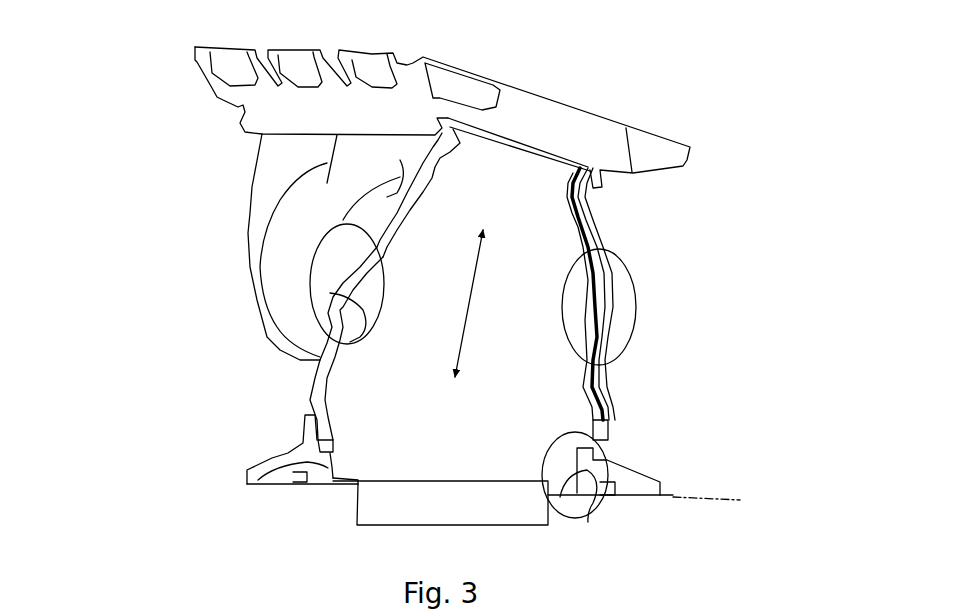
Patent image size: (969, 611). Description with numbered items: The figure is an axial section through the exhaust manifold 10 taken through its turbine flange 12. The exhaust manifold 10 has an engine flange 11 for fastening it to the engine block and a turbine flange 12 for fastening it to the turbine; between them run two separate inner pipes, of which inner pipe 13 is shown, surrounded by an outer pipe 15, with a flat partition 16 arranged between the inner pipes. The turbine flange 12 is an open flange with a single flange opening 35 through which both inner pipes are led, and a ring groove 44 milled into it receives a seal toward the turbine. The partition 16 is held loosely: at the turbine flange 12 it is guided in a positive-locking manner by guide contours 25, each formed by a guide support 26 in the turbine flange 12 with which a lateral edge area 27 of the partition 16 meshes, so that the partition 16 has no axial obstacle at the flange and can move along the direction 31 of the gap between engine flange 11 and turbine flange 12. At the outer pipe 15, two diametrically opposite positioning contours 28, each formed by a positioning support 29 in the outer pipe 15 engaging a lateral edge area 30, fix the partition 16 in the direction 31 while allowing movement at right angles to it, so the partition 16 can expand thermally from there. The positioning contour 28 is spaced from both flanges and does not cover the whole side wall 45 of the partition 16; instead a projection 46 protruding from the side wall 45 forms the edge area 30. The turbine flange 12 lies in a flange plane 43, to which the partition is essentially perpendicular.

The exhaust manifold 10 is at (155, 132).
The engine flange 11 is at (553, 105).
The turbine flange 12 is at (270, 457).
The inner pipe 13 is at (520, 527).
The outer pipe 15 is at (247, 217).
The partition 16 is at (400, 484).
The guide contour 25 is at (340, 433).
The guide support 26 is at (333, 468).
The lateral edge area 27 is at (277, 482).
The positioning contour 28 is at (377, 248).
The positioning support 29 is at (597, 317).
The lateral edge area 30 is at (363, 282).
The direction of the gap 31 is at (475, 287).
The flange opening 35 is at (342, 483).
The flange plane 43 is at (693, 497).
The ring groove 44 is at (300, 487).
The side wall 45 is at (325, 373).
The projection 46 is at (347, 292).